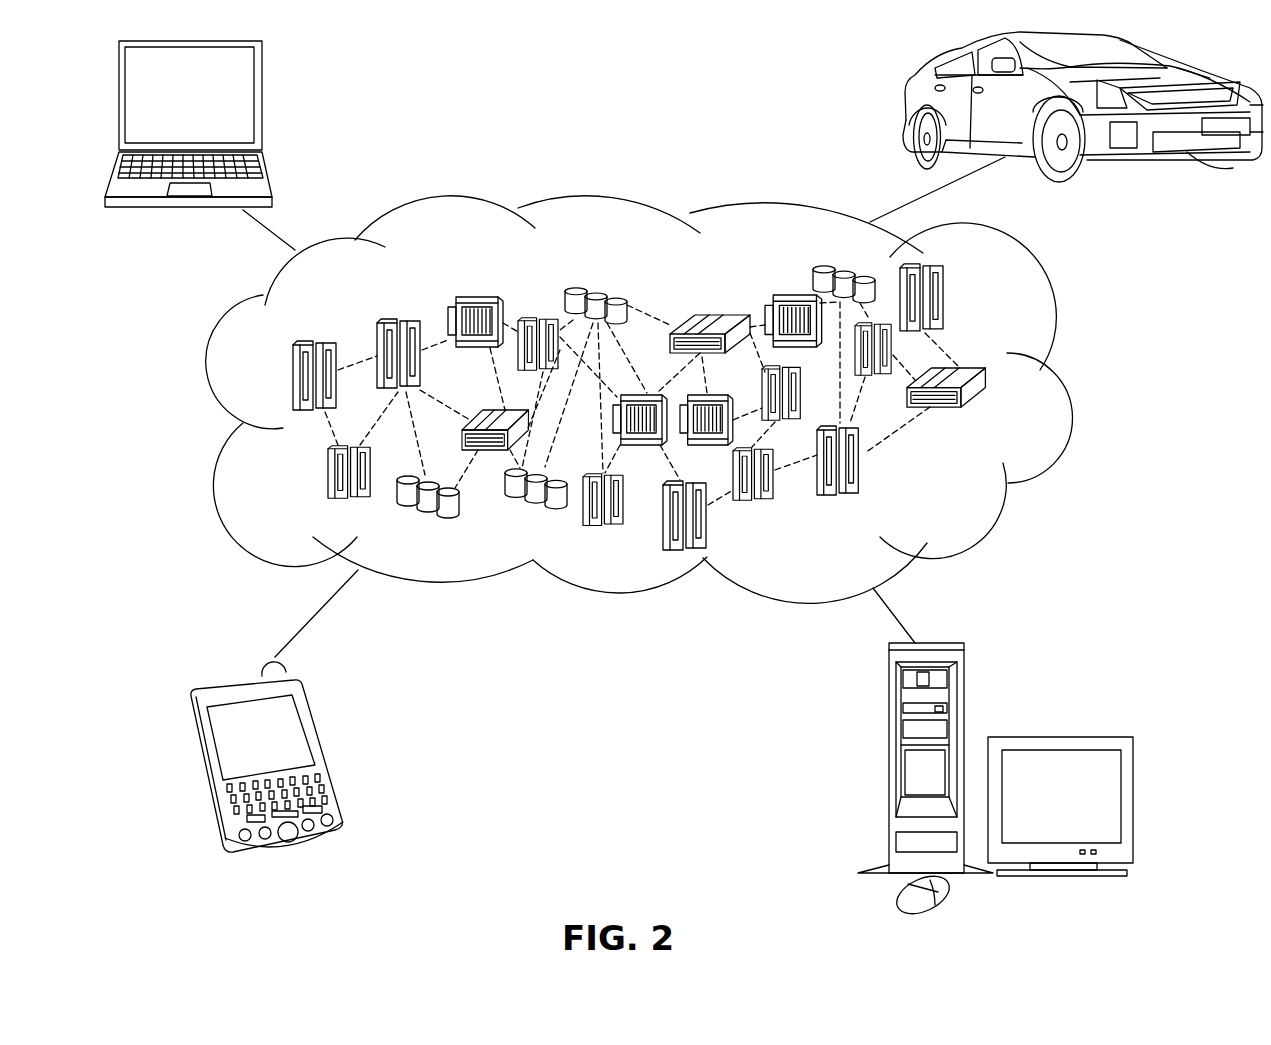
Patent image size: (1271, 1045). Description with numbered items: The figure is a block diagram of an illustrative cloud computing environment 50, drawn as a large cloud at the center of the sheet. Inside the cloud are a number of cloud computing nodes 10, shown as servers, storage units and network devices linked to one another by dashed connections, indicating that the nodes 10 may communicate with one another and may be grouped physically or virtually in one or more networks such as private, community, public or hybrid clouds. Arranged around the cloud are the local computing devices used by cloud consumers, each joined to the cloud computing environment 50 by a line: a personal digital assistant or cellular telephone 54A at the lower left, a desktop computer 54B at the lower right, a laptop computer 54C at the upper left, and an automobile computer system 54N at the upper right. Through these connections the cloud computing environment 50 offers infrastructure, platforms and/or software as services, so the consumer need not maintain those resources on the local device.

The cloud computing node 10 is at (969, 494).
The cloud computing environment 50 is at (1058, 388).
The personal digital assistant or cellular telephone 54A is at (317, 720).
The desktop computer 54B is at (889, 703).
The laptop computer 54C is at (262, 80).
The automobile computer system 54N is at (905, 93).